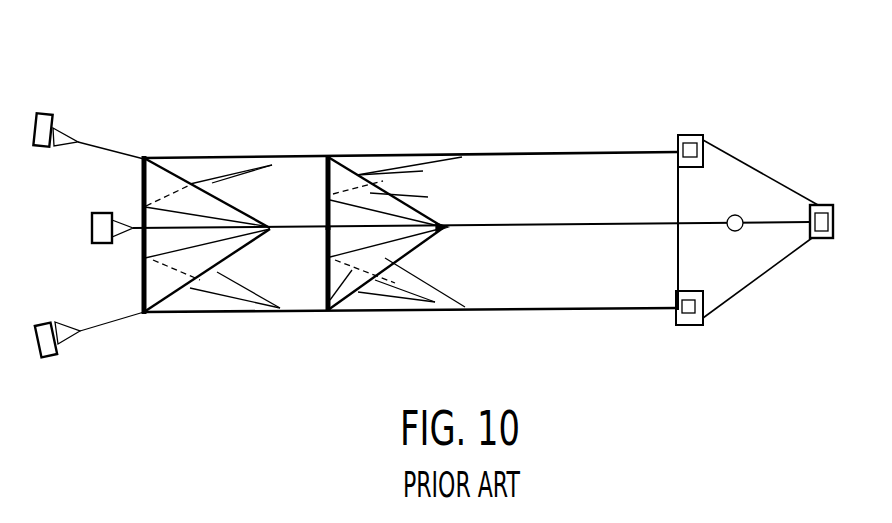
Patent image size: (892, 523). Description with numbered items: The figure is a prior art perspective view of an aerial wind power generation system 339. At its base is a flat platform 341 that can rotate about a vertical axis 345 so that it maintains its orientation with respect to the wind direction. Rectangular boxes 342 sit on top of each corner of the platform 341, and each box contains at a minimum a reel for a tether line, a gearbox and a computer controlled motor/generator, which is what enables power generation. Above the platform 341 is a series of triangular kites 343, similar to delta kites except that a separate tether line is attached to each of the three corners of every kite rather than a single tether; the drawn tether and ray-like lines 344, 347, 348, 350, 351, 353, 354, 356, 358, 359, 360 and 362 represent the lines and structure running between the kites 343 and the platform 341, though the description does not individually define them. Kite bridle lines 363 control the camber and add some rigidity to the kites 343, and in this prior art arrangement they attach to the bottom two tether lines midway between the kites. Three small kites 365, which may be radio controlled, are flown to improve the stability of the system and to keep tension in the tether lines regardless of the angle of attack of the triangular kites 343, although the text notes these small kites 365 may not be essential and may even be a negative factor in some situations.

The prior art optical system 339 is at (312, 85).
The flat platform 341 is at (742, 170).
The rectangular boxes 342 is at (818, 200).
The triangular kites 343 is at (158, 183).
The light rays 344 is at (182, 300).
The vertical axis 345 is at (742, 217).
The optical path 347 is at (713, 139).
The detector 348 is at (685, 142).
The lens 350 is at (327, 178).
The light ray 351 is at (357, 174).
The focal point 353 is at (448, 231).
The lens 354 is at (327, 280).
The light ray 356 is at (415, 205).
The optical axis 358 is at (768, 232).
The detector 359 is at (620, 310).
The housing 360 is at (634, 152).
The light ray 362 is at (350, 268).
The kite bridle lines 363 is at (413, 278).
The small kites 365 is at (48, 117).